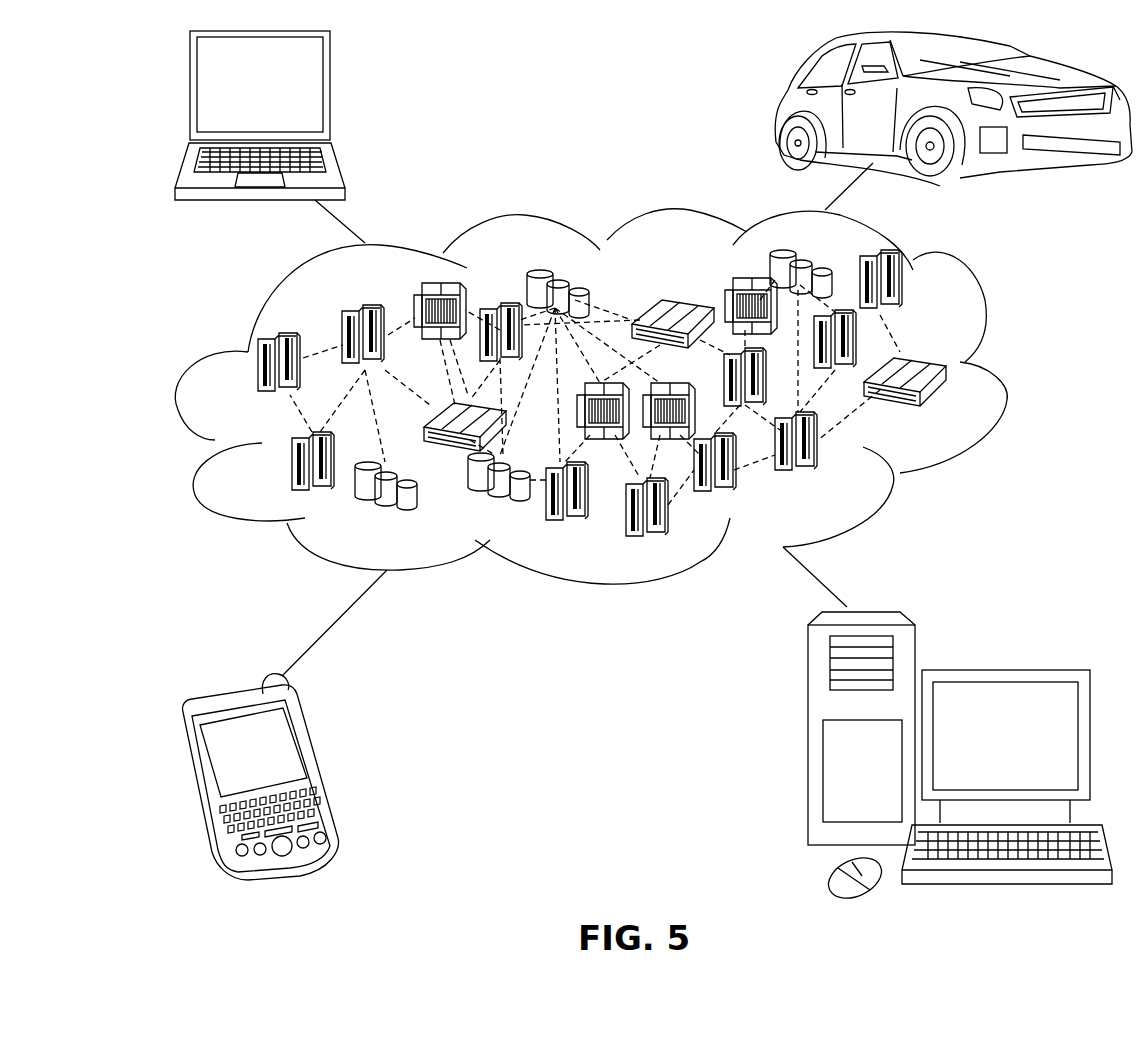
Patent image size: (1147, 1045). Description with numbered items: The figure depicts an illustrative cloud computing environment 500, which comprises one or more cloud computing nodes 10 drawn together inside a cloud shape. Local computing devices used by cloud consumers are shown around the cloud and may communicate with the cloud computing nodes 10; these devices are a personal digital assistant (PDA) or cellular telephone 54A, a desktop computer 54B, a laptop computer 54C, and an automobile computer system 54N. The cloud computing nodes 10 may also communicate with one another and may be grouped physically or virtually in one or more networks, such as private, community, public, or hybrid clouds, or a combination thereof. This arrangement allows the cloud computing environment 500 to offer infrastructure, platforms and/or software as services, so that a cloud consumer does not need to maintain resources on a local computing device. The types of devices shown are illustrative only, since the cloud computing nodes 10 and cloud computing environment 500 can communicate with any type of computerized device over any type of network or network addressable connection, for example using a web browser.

The cloud computing environment 500 is at (1000, 368).
The cloud computing nodes 10 is at (952, 409).
The personal digital assistant (PDA) or cellular telephone 54A is at (318, 766).
The desktop computer 54B is at (1005, 668).
The laptop computer 54C is at (330, 94).
The automobile computer system 54N is at (780, 108).